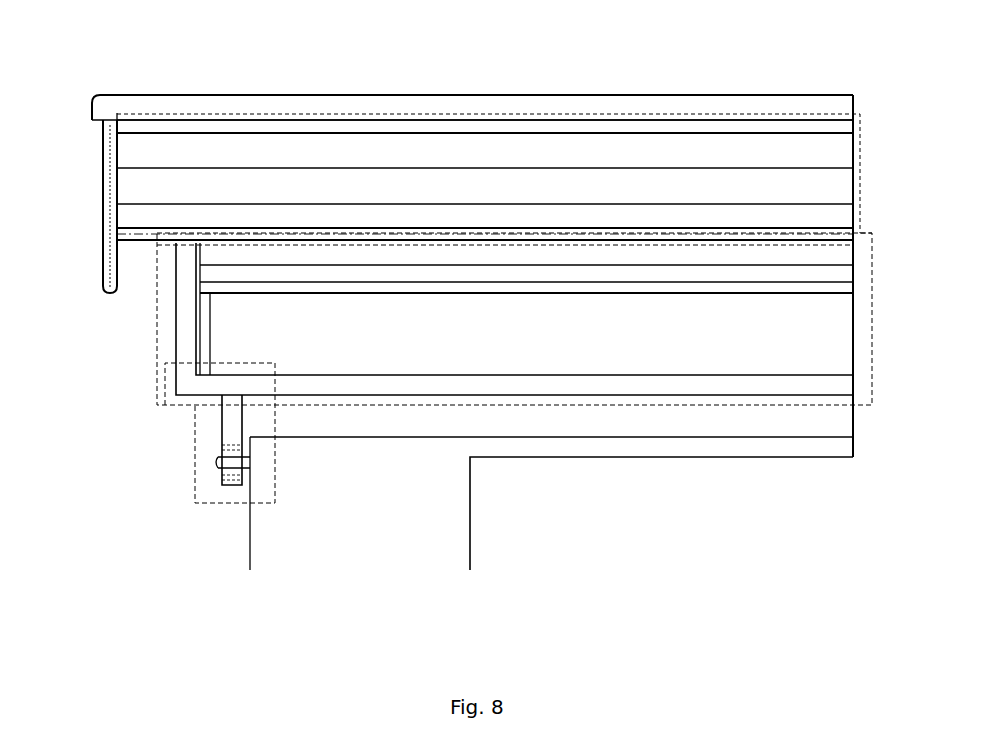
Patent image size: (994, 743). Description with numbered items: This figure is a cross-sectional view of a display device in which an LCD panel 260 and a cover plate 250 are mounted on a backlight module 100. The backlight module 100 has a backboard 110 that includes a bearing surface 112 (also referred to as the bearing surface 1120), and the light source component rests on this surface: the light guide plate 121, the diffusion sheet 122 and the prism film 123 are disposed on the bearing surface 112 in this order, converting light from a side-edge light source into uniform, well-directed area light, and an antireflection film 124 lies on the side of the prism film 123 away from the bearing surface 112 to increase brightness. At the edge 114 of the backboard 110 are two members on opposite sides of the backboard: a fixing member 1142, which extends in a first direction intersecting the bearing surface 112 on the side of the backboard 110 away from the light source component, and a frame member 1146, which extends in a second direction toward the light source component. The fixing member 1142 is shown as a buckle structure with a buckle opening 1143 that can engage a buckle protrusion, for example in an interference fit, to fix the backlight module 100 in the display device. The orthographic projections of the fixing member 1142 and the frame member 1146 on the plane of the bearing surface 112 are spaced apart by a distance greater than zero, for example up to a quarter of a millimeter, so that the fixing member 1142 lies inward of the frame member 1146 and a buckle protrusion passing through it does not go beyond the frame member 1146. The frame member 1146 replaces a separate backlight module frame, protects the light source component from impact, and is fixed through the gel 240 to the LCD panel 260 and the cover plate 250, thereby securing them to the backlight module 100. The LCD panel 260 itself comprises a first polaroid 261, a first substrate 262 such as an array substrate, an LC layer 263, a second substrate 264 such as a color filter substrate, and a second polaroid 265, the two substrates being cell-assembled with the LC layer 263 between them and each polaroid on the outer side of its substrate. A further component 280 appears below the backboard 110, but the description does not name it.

The backlight module 100 is at (697, 232).
The backboard 110 is at (653, 618).
The bearing surface 112 is at (392, 385).
The bearing surface 1120 is at (443, 377).
The edge 114 is at (186, 297).
The fixing member 1142 is at (224, 483).
The buckle opening 1143 is at (220, 452).
The frame member 1146 is at (188, 300).
The light guide plate 121 is at (838, 322).
The diffusion sheet 122 is at (835, 287).
The prism film 123 is at (822, 273).
The antireflection film 124 is at (810, 255).
The gel 240 is at (107, 225).
The cover plate 250 is at (642, 107).
The LCD panel 260 is at (560, 112).
The first polaroid 261 is at (127, 232).
The first substrate 262 is at (214, 212).
The LC layer 263 is at (310, 190).
The second substrate 264 is at (397, 148).
The second polaroid 265 is at (483, 127).
The back plate 280 is at (680, 452).